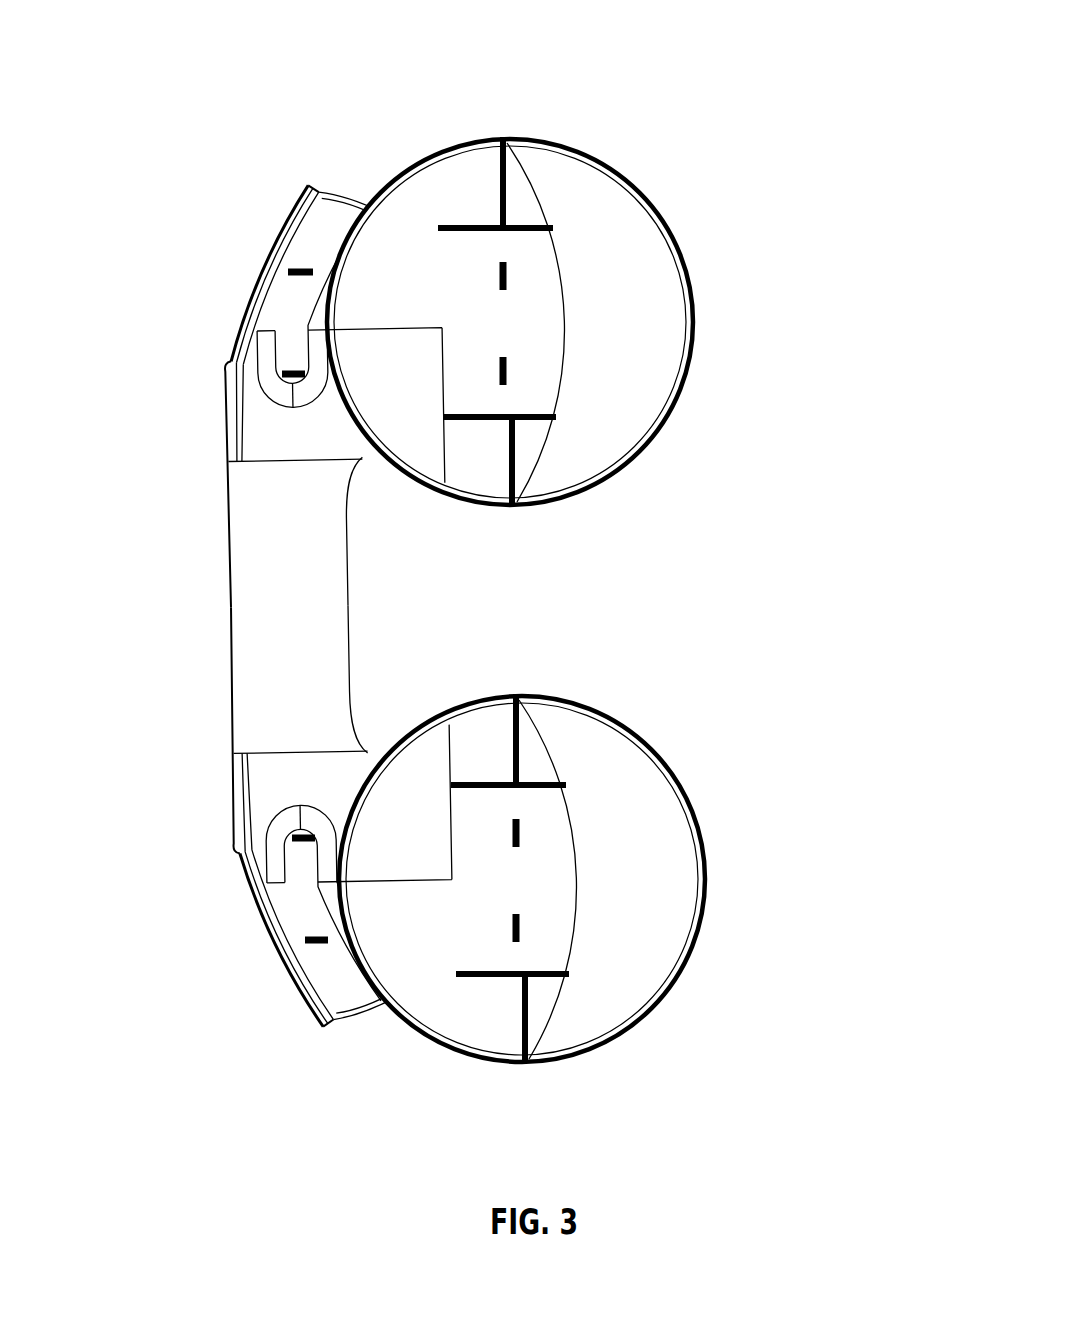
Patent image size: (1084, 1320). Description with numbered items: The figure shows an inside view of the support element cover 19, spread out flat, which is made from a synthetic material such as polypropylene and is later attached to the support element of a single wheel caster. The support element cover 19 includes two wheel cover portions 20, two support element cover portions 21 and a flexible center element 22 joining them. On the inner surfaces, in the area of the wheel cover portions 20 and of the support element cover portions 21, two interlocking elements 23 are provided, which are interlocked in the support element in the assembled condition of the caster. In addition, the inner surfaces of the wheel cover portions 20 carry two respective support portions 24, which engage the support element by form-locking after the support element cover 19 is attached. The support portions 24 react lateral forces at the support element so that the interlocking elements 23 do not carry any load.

The support element cover 19 is at (742, 130).
The wheel cover portions 20 is at (628, 263).
The support element cover portions 21 is at (273, 427).
The flexible center element 22 is at (293, 643).
The interlocking elements 23 is at (290, 372).
The support portions 24 is at (463, 223).